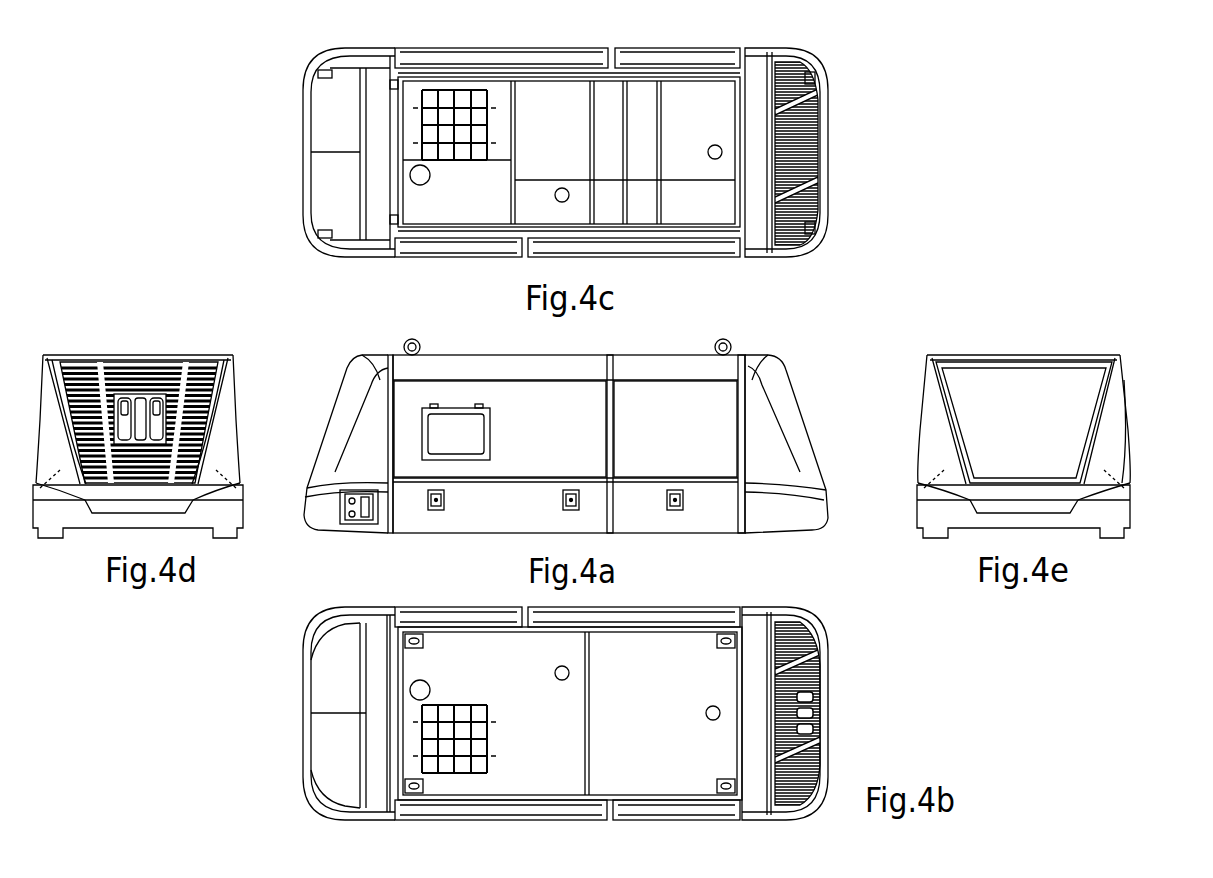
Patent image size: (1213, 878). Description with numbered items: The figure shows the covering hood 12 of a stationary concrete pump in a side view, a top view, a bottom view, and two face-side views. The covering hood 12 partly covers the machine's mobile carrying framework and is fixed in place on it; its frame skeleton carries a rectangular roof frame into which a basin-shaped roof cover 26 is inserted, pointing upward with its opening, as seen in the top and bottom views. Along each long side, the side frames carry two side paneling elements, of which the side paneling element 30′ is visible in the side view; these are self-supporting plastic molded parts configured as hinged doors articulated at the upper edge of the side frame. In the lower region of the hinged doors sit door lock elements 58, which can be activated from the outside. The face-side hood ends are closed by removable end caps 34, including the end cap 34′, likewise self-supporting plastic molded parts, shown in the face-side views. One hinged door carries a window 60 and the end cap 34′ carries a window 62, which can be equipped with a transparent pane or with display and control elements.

In FIG. 4A, the covering hood 12 is at (580, 438).
In FIG. 4B, the covering hood 12 is at (565, 701).
In FIG. 4D, the covering hood 12 is at (156, 384).
In FIG. 4E, the covering hood 12 is at (1056, 399).
In FIG. 4B, the roof cover 26 is at (620, 665).
In FIG. 4C, the side paneling element 30′ is at (468, 54).
In FIG. 4A, the side paneling element 30′ is at (545, 445).
In FIG. 4B, the side paneling element 30′ is at (520, 812).
In FIG. 4C, the end cap 34 is at (338, 88).
In FIG. 4A, the end cap 34′ is at (374, 422).
In FIG. 4E, the end cap 34′ is at (1077, 420).
In FIG. 4A, the door lock element 58 is at (563, 505).
In FIG. 4A, the window 60 is at (452, 425).
In FIG. 4A, the window 62 is at (358, 490).